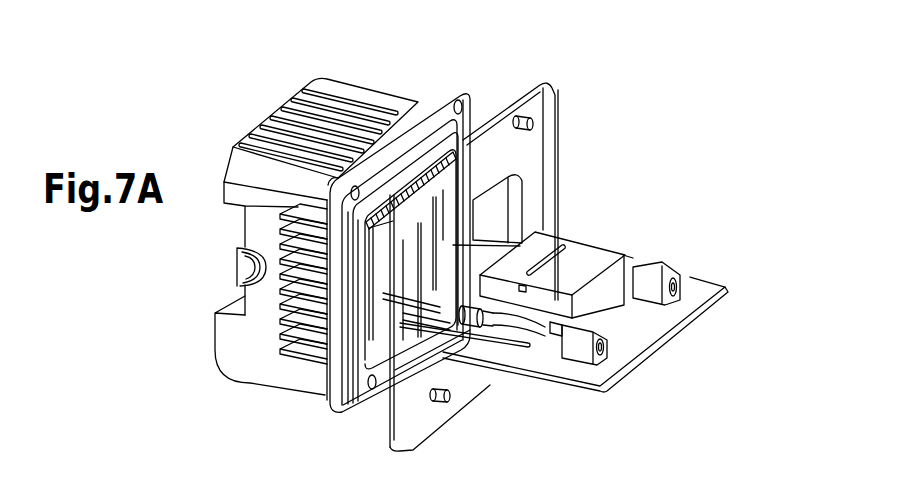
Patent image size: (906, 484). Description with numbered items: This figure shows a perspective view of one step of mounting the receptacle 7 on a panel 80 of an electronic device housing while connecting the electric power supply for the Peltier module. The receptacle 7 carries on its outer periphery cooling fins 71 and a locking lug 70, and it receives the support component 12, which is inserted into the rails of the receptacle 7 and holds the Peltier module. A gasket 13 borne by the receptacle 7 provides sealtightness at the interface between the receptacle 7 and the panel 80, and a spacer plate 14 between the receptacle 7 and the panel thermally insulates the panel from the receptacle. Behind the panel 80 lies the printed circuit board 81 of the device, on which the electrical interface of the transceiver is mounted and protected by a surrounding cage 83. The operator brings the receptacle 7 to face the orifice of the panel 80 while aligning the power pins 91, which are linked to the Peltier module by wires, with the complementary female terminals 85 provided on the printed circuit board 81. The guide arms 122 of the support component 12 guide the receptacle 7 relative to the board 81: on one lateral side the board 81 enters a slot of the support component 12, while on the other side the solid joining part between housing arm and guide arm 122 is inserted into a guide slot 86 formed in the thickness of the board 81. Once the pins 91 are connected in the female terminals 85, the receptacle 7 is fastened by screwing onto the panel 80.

The receptacle 7 is at (234, 154).
The locking lug 70 is at (237, 272).
The cooling fins 71 is at (338, 110).
The support component 12 is at (377, 323).
The gasket 13 is at (430, 143).
The spacer plate 14 is at (440, 110).
The panel 80 is at (537, 107).
The printed circuit board 81 is at (637, 332).
The cage 83 is at (593, 258).
The female terminals 85 is at (658, 277).
The guide slot 86 is at (517, 343).
The power pins 91 is at (537, 330).
The guide arms 122 is at (467, 255).